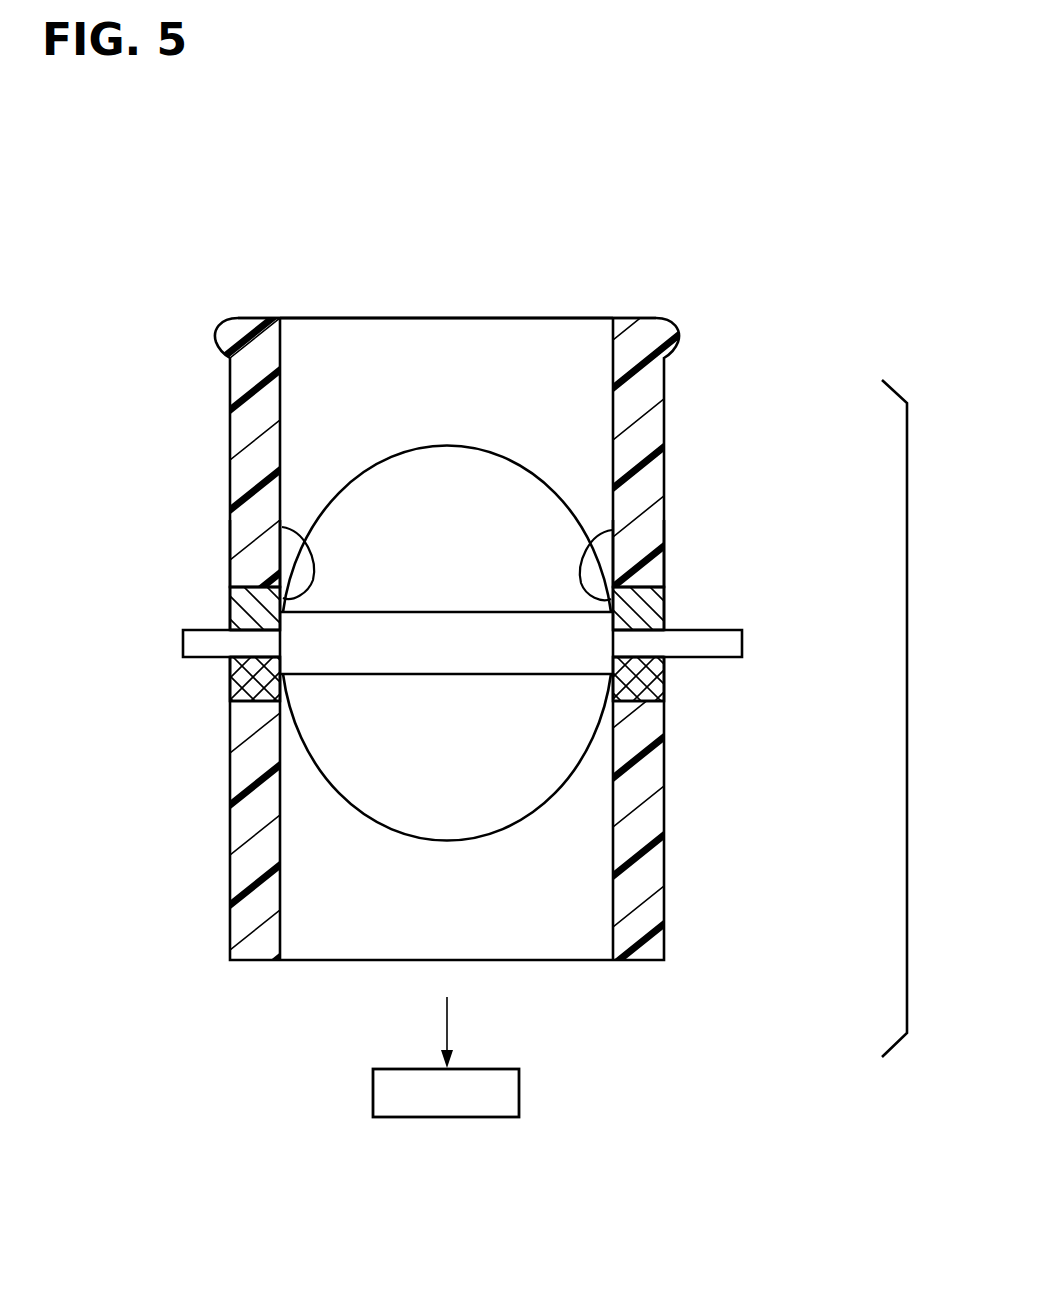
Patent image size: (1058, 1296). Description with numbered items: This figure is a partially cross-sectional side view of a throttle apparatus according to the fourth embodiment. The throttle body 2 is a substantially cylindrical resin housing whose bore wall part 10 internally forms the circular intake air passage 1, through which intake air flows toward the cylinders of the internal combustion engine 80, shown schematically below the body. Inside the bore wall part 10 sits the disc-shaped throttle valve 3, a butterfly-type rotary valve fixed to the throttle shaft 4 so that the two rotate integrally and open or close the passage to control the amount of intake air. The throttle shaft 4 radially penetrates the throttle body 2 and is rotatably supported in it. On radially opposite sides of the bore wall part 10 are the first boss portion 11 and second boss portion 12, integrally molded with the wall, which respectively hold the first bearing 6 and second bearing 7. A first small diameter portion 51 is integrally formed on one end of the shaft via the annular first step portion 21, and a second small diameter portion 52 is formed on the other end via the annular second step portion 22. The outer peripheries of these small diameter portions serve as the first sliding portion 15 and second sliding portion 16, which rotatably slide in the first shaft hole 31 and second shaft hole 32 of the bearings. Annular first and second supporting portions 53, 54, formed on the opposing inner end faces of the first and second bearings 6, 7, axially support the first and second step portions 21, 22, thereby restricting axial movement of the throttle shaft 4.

The intake air passage 1 is at (368, 340).
The throttle body 2 is at (677, 312).
The throttle valve 3 is at (426, 473).
The throttle shaft 4 is at (479, 624).
The first bearing 6 is at (240, 602).
The second bearing 7 is at (660, 605).
The bore wall part 10 is at (648, 389).
The first boss portion 11 is at (250, 562).
The second boss portion 12 is at (640, 548).
The first sliding portion 15 is at (240, 620).
The second sliding portion 16 is at (658, 617).
The first step portion 21 is at (230, 696).
The second step portion 22 is at (665, 708).
The first shaft hole 31 is at (258, 632).
The second shaft hole 32 is at (665, 662).
The first small diameter portion 51 is at (190, 643).
The second small diameter portion 52 is at (723, 643).
The first supporting portion 53 is at (282, 527).
The second supporting portion 54 is at (612, 530).
The internal combustion engine 80 is at (520, 1088).